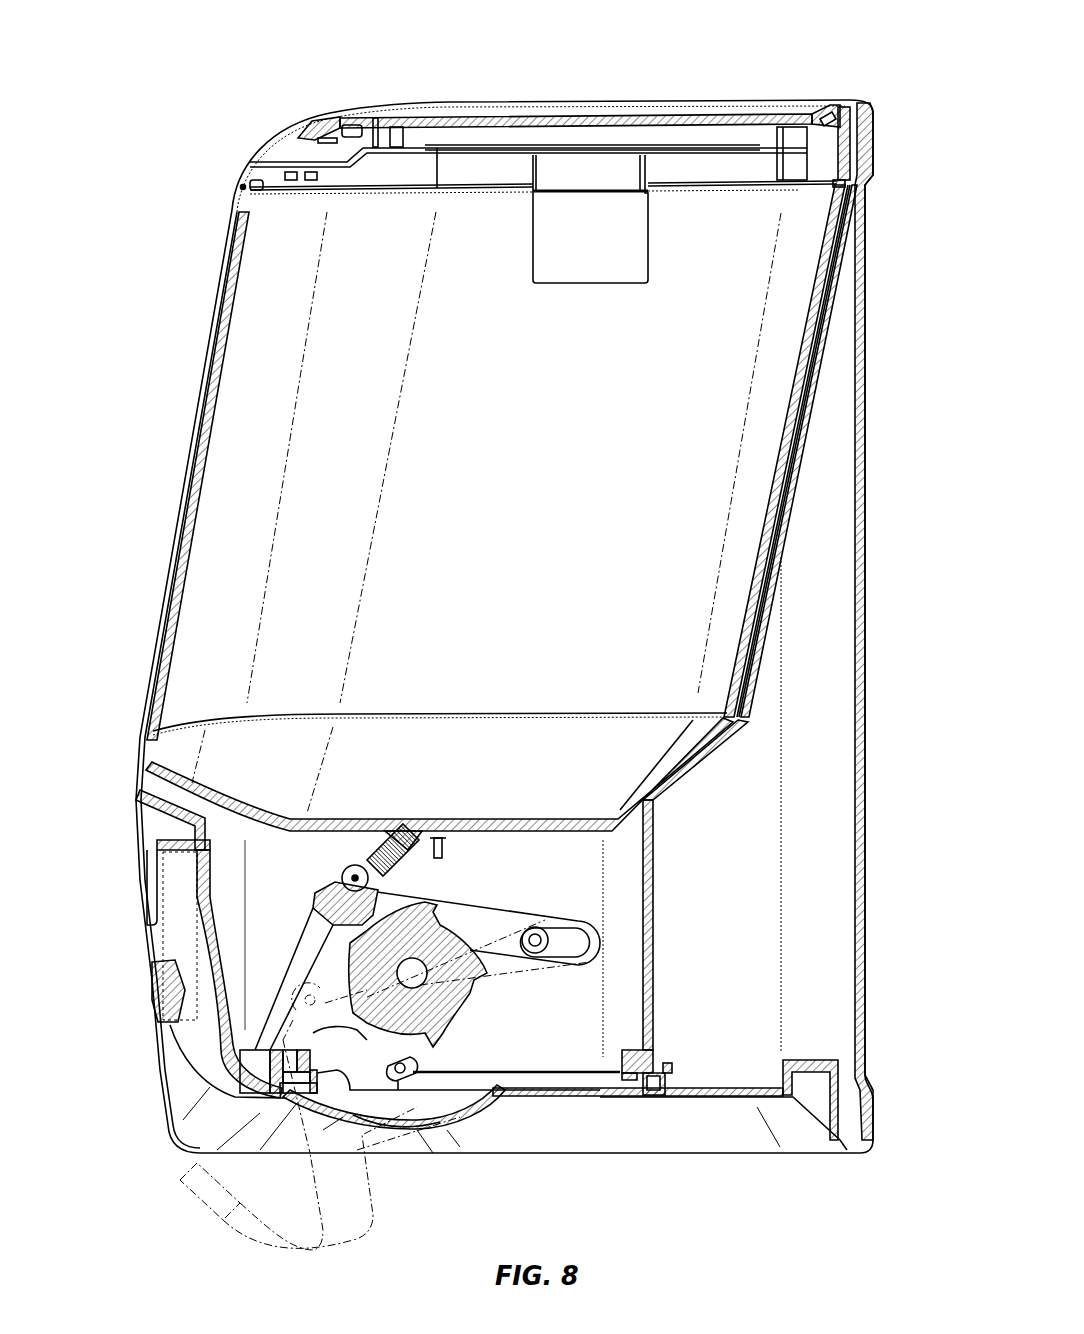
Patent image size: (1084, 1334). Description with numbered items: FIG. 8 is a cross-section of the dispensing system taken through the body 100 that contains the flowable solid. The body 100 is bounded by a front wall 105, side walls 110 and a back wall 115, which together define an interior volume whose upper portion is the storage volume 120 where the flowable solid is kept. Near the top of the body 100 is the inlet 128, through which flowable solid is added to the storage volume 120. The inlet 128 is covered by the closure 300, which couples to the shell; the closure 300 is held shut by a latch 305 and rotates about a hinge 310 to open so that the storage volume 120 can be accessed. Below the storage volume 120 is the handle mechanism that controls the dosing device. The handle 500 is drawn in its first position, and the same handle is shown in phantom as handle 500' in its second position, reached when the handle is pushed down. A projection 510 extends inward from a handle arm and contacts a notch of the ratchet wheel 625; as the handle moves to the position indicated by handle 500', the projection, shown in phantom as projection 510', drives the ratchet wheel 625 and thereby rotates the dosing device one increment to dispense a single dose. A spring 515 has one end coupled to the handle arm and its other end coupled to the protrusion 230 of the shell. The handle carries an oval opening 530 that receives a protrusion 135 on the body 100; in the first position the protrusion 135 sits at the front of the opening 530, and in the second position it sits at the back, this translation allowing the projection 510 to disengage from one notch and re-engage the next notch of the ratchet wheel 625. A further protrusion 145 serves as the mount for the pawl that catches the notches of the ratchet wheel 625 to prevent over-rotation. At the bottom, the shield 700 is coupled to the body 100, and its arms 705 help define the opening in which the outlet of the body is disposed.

The body 100 is at (160, 289).
The front wall 105 is at (214, 357).
The side walls 110 is at (532, 368).
The back wall 115 is at (808, 326).
The storage volume 120 is at (265, 304).
The inlet 128 is at (480, 195).
The protrusion 135 is at (530, 926).
The protrusion 145 is at (415, 1064).
The protrusion 230 is at (442, 838).
The closure 300 is at (550, 95).
The latch 305 is at (330, 128).
The hinge 310 is at (840, 104).
The handle 500 is at (162, 969).
The handle in second position 500' is at (253, 1185).
The projection 510 is at (316, 909).
The projection in second position 510' is at (222, 1040).
The spring 515 is at (388, 850).
The opening 530 is at (577, 947).
The ratchet wheel 625 is at (427, 920).
The shield 700 is at (508, 1105).
The arms 705 is at (422, 1132).